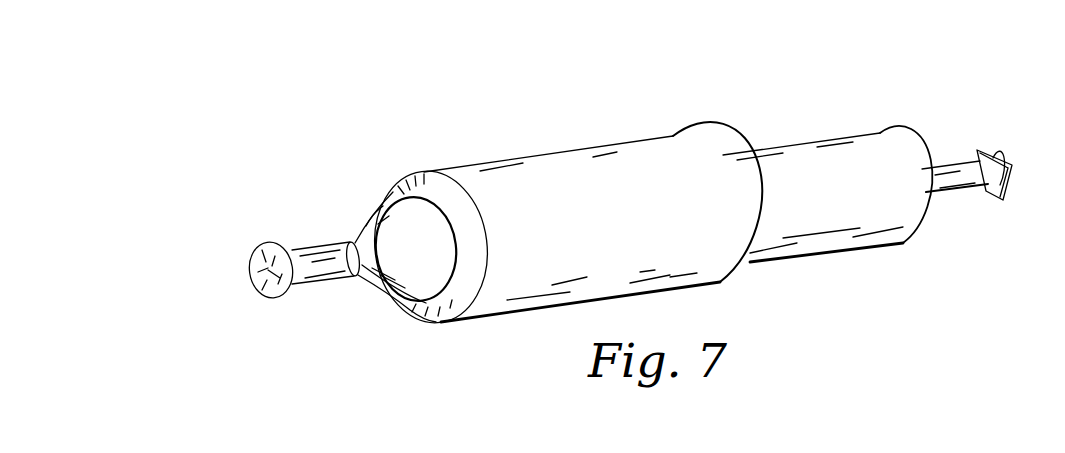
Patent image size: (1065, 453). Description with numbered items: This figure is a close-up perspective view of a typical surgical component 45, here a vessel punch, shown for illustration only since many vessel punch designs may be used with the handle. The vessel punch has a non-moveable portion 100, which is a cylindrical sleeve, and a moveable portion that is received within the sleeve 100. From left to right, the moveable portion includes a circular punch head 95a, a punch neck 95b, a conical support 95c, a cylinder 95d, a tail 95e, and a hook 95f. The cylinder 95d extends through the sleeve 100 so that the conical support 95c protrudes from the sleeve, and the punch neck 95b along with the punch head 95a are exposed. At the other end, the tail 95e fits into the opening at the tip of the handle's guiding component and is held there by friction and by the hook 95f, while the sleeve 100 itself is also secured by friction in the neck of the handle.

The surgical component 45 is at (544, 96).
The non-moveable portion 100 is at (517, 159).
The circular punch head 95a is at (254, 251).
The punch neck 95b is at (328, 247).
The conical support 95c is at (371, 218).
The cylinder 95d is at (818, 160).
The tail 95e is at (955, 167).
The hook 95f is at (997, 157).